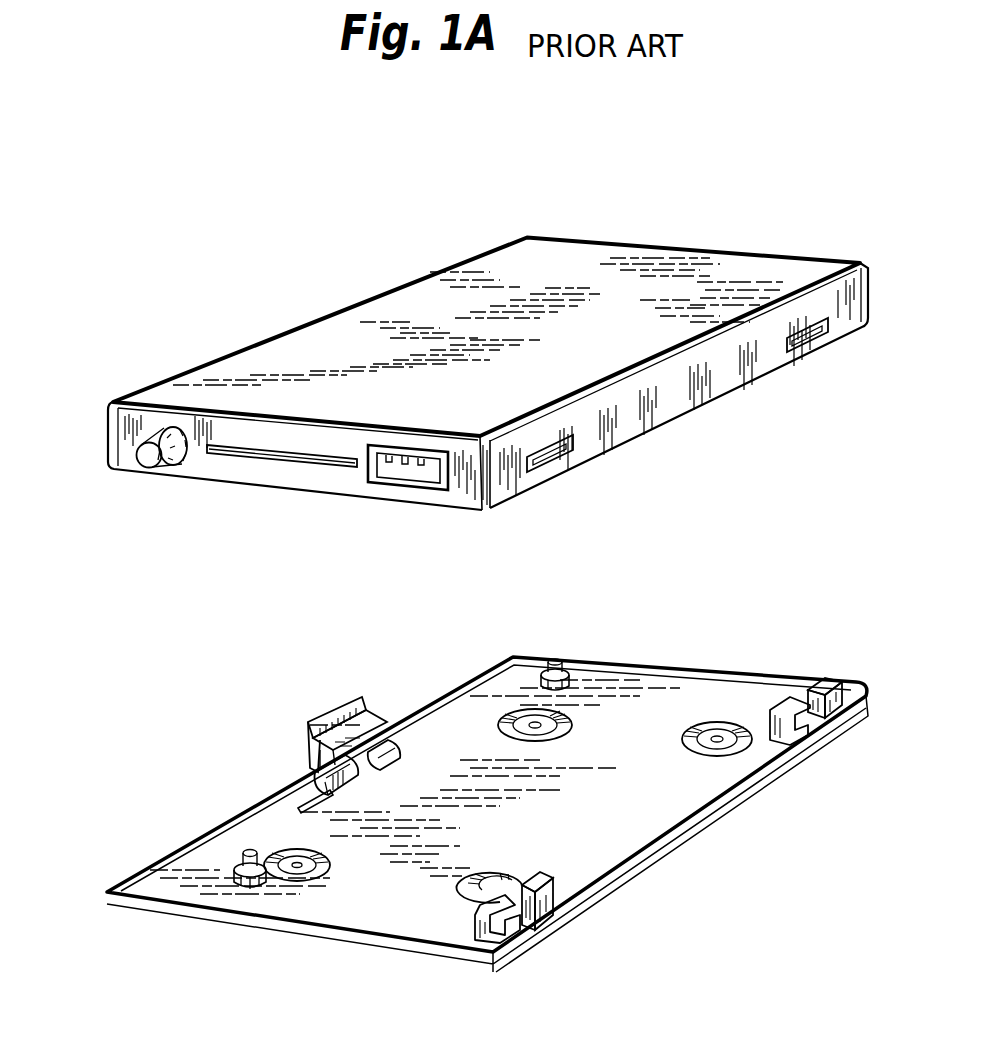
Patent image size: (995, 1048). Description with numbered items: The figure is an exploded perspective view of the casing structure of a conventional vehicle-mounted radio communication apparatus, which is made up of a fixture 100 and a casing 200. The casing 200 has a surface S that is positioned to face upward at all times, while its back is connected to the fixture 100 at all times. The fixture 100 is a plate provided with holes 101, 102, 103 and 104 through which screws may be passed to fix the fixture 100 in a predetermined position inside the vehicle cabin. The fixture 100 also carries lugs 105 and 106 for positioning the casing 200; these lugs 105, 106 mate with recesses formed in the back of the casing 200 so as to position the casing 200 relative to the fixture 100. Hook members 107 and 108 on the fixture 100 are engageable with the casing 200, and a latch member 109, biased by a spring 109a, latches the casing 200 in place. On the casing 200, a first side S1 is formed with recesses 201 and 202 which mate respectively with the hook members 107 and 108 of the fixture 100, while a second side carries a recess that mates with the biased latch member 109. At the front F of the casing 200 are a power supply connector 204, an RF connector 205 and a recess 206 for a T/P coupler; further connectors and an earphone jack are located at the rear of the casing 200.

The casing 200 is at (121, 347).
The surface S is at (415, 320).
The first side S1 is at (688, 389).
The front F is at (348, 482).
The recess 201 is at (571, 451).
The recess 202 is at (814, 344).
The power supply connector 204 is at (415, 471).
The RF connector 205 is at (146, 468).
The recess for a T/P coupler 206 is at (297, 459).
The fixture 100 is at (157, 802).
The hole 101 is at (533, 720).
The hole 102 is at (718, 738).
The hole 103 is at (491, 895).
The hole 104 is at (294, 871).
The lug 105 is at (247, 851).
The lug 106 is at (558, 660).
The hook member 107 is at (531, 901).
The hook member 108 is at (818, 682).
The latch member 109 is at (339, 705).
The spring 109a is at (354, 760).